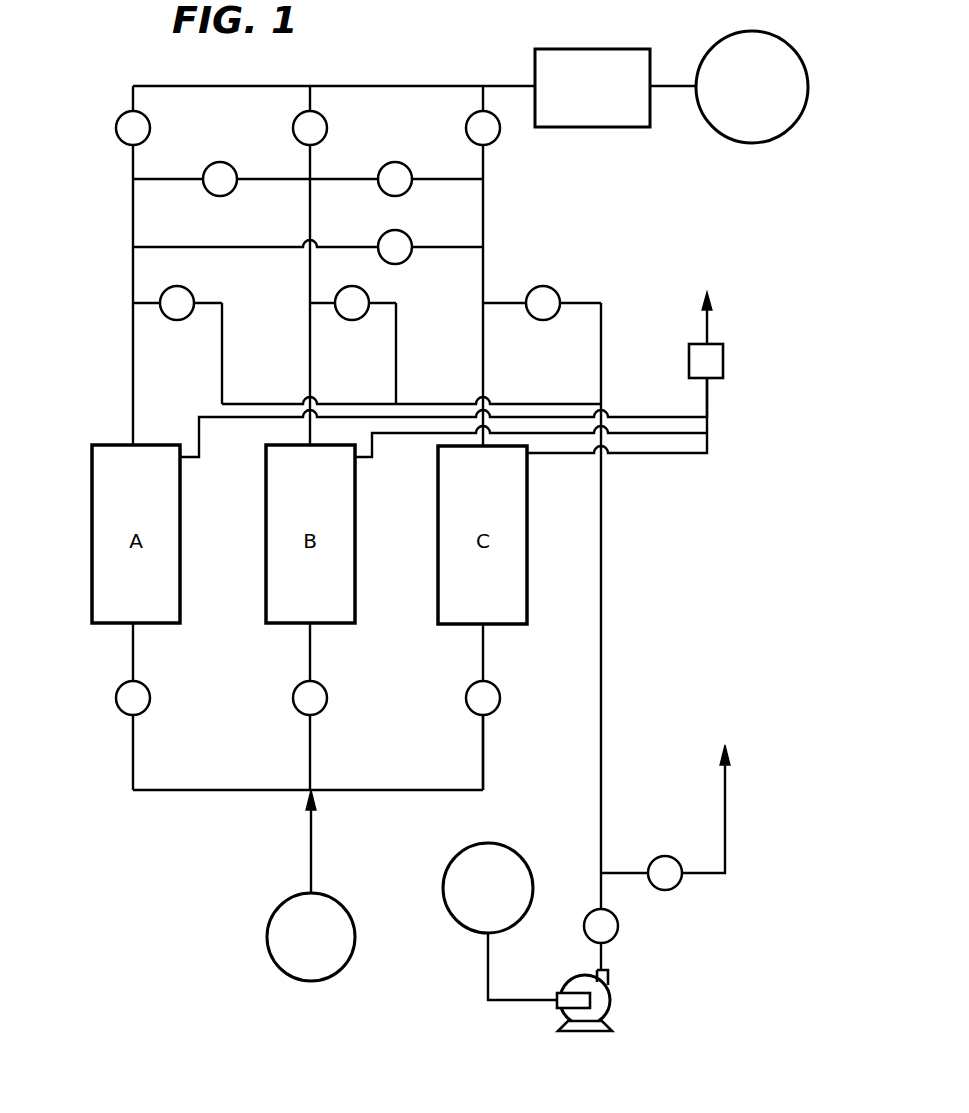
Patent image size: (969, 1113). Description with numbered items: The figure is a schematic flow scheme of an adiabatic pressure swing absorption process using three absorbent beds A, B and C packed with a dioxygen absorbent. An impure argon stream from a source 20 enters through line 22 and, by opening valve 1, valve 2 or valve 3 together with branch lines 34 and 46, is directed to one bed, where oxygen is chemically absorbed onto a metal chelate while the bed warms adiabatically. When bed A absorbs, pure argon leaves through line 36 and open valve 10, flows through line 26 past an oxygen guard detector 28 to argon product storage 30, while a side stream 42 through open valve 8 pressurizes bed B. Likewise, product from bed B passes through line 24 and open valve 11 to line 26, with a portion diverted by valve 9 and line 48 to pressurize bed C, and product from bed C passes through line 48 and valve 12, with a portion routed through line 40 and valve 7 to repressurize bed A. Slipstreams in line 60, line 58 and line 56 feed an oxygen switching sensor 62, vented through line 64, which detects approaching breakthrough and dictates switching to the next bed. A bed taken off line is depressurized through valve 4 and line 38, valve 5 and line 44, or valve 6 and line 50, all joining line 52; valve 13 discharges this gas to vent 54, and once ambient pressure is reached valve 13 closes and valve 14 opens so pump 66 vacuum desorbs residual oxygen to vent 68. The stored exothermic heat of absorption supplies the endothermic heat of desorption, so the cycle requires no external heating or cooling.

The valve 1 is at (148, 690).
The valve 2 is at (325, 690).
The valve 3 is at (498, 690).
The valve 4 is at (174, 320).
The valve 5 is at (350, 320).
The valve 6 is at (555, 292).
The valve 7 is at (400, 263).
The valve 8 is at (208, 190).
The valve 9 is at (382, 190).
The valve 10 is at (150, 124).
The valve 11 is at (327, 124).
The valve 12 is at (497, 138).
The valve 13 is at (665, 856).
The valve 14 is at (618, 922).
The source 20 is at (283, 900).
The line 22 is at (311, 832).
The line 24 is at (310, 282).
The line 26 is at (404, 84).
The oxygen guard detector 28 is at (597, 49).
The argon product storage 30 is at (746, 31).
The branch line 34 is at (250, 790).
The line 36 is at (133, 216).
The line 38 is at (222, 360).
The line 40 is at (218, 246).
The side stream 42 is at (287, 178).
The line 44 is at (396, 360).
The branch line 46 is at (485, 748).
The line 48 is at (484, 202).
The conduit 50 is at (601, 380).
The line 52 is at (602, 633).
The vent 54 is at (725, 812).
The line 56 is at (698, 452).
The line 58 is at (657, 434).
The line 60 is at (685, 417).
The oxygen switching sensor 62 is at (723, 360).
The line 64 is at (707, 312).
The pump 66 is at (612, 995).
The vent 68 is at (458, 858).